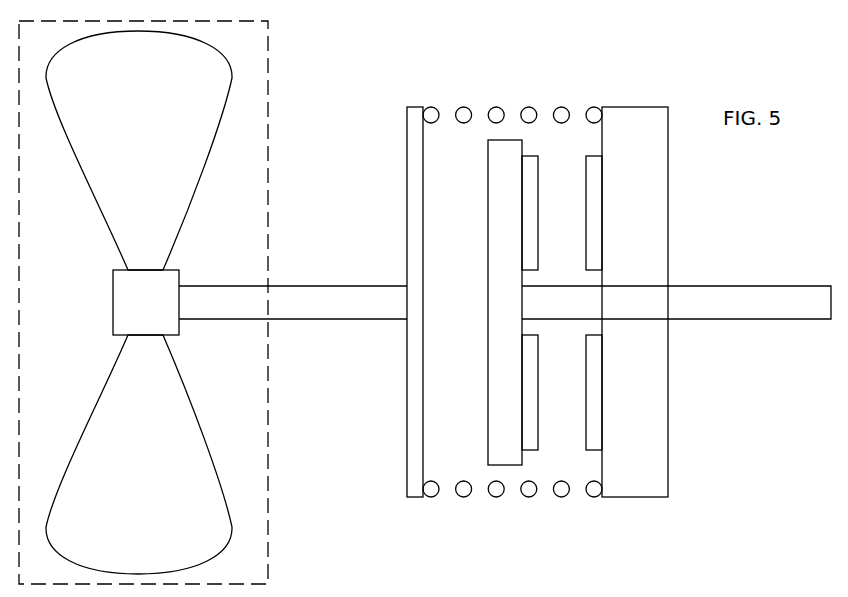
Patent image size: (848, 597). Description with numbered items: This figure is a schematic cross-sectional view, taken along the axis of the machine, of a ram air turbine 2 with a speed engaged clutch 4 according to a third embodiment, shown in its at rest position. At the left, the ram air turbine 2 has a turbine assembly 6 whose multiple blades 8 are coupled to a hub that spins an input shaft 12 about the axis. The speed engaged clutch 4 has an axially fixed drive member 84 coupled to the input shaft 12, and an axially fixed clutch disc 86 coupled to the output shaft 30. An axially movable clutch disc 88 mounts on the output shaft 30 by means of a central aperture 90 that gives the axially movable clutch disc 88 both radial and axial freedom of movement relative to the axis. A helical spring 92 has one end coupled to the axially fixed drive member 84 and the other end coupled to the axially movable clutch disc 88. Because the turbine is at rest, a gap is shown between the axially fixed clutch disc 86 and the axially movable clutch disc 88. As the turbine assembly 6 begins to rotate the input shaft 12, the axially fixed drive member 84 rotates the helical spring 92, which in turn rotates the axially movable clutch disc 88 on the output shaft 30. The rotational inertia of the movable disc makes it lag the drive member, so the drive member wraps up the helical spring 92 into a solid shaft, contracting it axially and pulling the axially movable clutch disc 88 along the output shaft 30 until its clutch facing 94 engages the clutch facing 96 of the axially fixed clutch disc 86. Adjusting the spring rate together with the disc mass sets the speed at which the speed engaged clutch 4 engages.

The ram air turbine 2 is at (583, 286).
The speed engaged clutch 4 is at (583, 325).
The turbine assembly 6 is at (174, 302).
The blades 8 is at (226, 115).
The input shaft 12 is at (297, 285).
The output shaft 30 is at (783, 286).
The axially fixed drive member 84 is at (407, 447).
The axially fixed clutch disc 86 is at (487, 212).
The axially movable clutch disc 88 is at (668, 167).
The central aperture 90 is at (640, 286).
The helical spring 92 is at (529, 497).
The clutch facing 94 is at (585, 208).
The clutch facing 96 is at (538, 223).